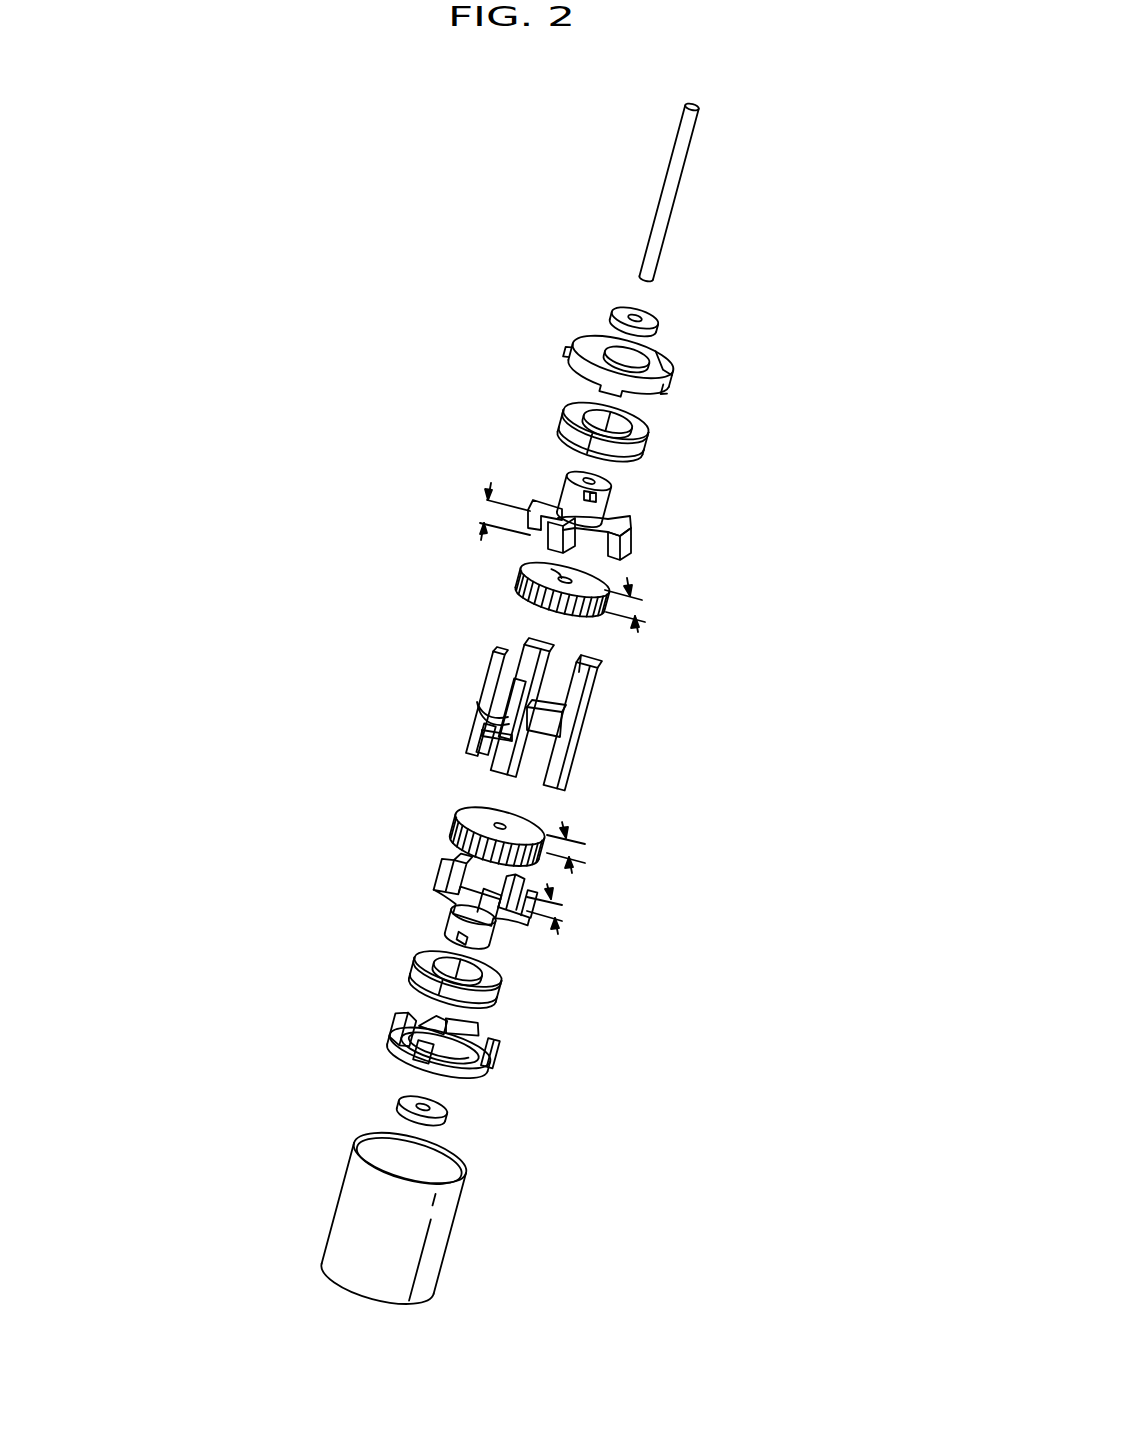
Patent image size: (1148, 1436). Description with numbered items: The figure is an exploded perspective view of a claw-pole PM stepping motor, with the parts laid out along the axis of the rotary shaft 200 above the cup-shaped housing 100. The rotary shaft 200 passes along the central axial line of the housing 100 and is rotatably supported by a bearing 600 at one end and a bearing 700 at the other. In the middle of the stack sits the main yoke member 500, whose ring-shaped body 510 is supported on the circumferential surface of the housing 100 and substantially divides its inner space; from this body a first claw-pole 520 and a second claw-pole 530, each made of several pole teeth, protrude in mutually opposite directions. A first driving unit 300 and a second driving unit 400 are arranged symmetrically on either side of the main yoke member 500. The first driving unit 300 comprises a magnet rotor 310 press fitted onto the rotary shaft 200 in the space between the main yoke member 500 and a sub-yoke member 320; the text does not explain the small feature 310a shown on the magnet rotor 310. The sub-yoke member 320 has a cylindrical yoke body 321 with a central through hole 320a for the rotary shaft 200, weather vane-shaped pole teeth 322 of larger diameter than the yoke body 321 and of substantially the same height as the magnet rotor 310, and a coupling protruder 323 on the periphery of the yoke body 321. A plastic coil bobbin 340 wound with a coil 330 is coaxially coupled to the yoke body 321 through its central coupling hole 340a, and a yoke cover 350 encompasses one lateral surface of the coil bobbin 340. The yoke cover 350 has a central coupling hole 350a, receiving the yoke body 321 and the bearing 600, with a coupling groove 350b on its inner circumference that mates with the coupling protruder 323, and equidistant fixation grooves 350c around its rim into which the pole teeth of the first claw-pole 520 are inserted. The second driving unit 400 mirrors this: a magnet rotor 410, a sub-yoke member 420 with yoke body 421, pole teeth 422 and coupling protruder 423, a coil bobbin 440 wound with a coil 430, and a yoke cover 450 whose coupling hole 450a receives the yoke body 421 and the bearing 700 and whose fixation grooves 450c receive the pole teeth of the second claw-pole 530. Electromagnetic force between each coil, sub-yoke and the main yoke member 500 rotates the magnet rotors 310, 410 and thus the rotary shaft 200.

The housing 100 is at (350, 1228).
The rotary shaft 200 is at (678, 190).
The first driving unit 300 is at (412, 518).
The magnet rotor 310 is at (508, 578).
The gear slot 310a is at (560, 573).
The sub-yoke member 320 is at (648, 498).
The through hole 320a is at (584, 499).
The yoke body 321 is at (579, 518).
The pole teeth 322 is at (650, 528).
The coupling protruder 323 is at (590, 496).
The coil 330 is at (650, 458).
The coil bobbin 340 is at (659, 414).
The central coupling hole 340a is at (655, 432).
The yoke cover 350 is at (653, 347).
The coupling hole 350a is at (626, 359).
The coupling groove 350b is at (661, 373).
The fixation grooves 350c is at (567, 352).
The second driving unit 400 is at (292, 920).
The magnet rotor 410 is at (452, 832).
The sub-yoke member 420 is at (458, 879).
The yoke body 421 is at (480, 907).
The pole teeth 422 is at (487, 888).
The coupling protruder 423 is at (462, 938).
The coil 430 is at (482, 1000).
The coil bobbin 440 is at (415, 965).
The yoke cover 450 is at (427, 1045).
The coupling hole 450a is at (412, 1036).
The fixation grooves 450c is at (490, 1053).
The main yoke member 500 is at (575, 725).
The ring-shaped body 510 is at (534, 714).
The first claw-pole 520 is at (521, 718).
The second claw-pole 530 is at (494, 739).
The bearing 600 is at (660, 322).
The bearing 700 is at (398, 1110).